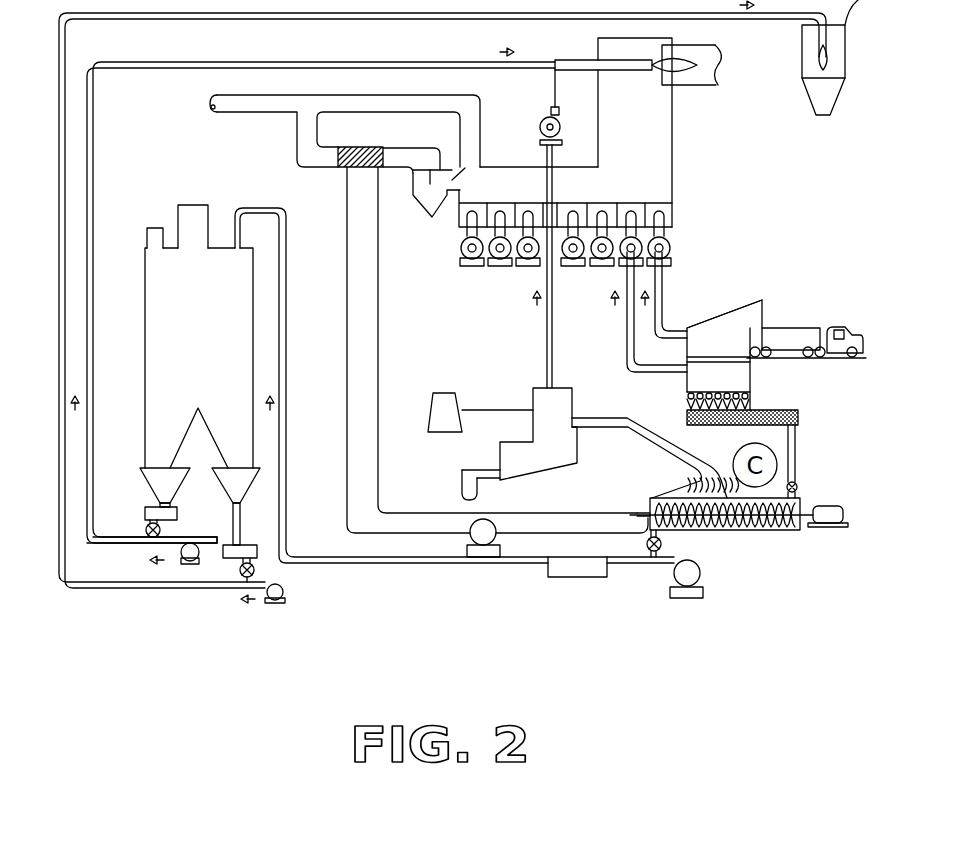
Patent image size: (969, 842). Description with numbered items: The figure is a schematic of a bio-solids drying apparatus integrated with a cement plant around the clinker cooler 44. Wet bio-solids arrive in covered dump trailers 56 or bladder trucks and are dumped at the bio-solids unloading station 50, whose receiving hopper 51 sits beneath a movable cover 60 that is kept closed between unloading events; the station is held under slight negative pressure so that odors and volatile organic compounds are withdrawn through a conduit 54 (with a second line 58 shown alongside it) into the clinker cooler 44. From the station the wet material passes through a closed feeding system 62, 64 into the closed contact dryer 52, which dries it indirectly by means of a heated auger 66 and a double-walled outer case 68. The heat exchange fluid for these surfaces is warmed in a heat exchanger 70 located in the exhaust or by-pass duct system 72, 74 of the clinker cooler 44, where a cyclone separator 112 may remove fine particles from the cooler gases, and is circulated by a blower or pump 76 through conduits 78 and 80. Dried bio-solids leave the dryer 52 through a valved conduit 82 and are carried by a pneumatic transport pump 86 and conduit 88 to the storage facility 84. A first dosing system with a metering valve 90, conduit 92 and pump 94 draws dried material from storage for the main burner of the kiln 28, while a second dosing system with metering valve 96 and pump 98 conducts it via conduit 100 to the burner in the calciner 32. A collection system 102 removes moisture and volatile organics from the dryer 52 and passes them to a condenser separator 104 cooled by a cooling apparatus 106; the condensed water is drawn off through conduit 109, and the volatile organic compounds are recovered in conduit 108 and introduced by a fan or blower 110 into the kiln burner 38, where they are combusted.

The kiln 28 is at (705, 85).
The calciner 32 is at (845, 45).
The kiln burner 38 is at (633, 72).
The clinker cooler 44 is at (673, 162).
The bio-solids unloading station 50 is at (682, 379).
The receiving hopper 51 is at (683, 392).
The contact dryer 52 is at (808, 492).
The conduit 54 is at (661, 314).
The covered dump trailer 56 is at (807, 328).
The conduit 58 is at (625, 340).
The movable cover 60 is at (762, 303).
The closed feeding system 62 is at (782, 410).
The closed feeding system 64 is at (797, 453).
The auger 66 is at (783, 532).
The outer case 68 is at (770, 532).
The heat exchanger 70 is at (386, 168).
The exhaust duct system 72 is at (415, 138).
The exhaust duct system 74 is at (481, 118).
The blower or pump 76 is at (487, 558).
The conduit 78 is at (347, 361).
The conduit 80 is at (380, 366).
The valved conduit 82 is at (662, 543).
The storage facility 84 is at (143, 309).
The pneumatic transport pump 86 is at (677, 564).
The conduit 88 is at (388, 567).
The metering valve 90 is at (147, 529).
The conduit 92 is at (120, 545).
The pump 94 is at (190, 565).
The metering valve 96 is at (256, 571).
The pump 98 is at (277, 604).
The conduit 100 is at (59, 270).
The collection system 102 is at (674, 475).
The condenser separator 104 is at (575, 459).
The cooling apparatus 106 is at (443, 393).
The conduit 108 is at (553, 316).
The conduit 109 is at (462, 485).
The fan or blower 110 is at (540, 124).
The cyclone separator 112 is at (432, 218).